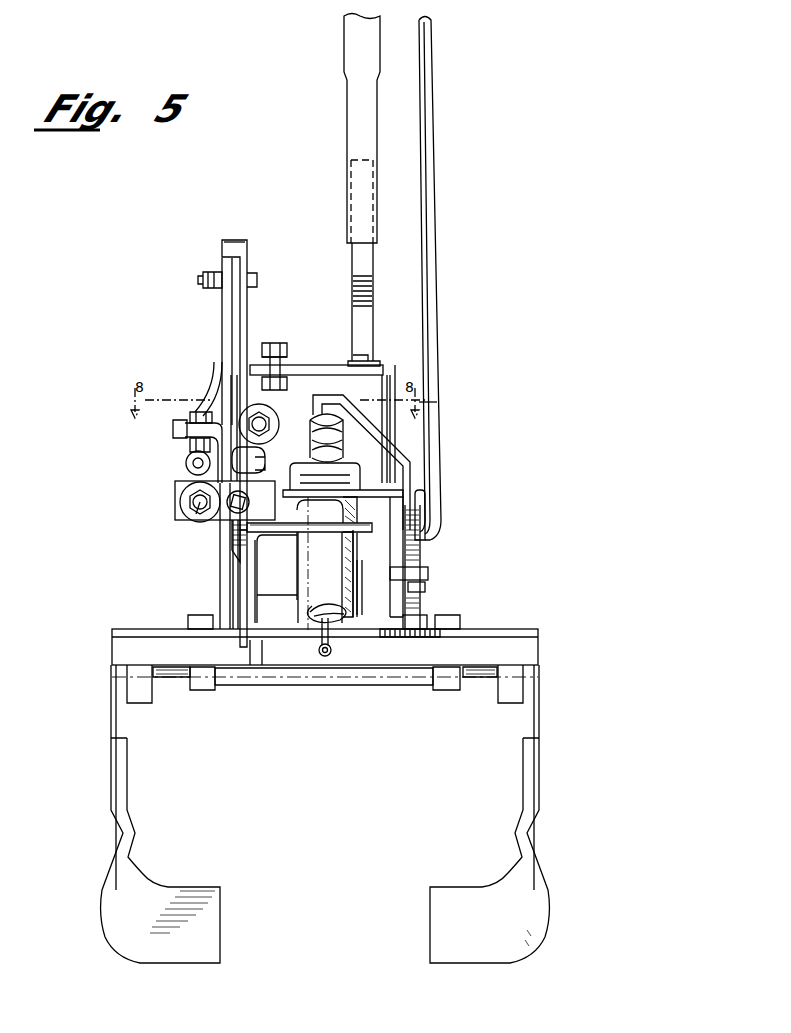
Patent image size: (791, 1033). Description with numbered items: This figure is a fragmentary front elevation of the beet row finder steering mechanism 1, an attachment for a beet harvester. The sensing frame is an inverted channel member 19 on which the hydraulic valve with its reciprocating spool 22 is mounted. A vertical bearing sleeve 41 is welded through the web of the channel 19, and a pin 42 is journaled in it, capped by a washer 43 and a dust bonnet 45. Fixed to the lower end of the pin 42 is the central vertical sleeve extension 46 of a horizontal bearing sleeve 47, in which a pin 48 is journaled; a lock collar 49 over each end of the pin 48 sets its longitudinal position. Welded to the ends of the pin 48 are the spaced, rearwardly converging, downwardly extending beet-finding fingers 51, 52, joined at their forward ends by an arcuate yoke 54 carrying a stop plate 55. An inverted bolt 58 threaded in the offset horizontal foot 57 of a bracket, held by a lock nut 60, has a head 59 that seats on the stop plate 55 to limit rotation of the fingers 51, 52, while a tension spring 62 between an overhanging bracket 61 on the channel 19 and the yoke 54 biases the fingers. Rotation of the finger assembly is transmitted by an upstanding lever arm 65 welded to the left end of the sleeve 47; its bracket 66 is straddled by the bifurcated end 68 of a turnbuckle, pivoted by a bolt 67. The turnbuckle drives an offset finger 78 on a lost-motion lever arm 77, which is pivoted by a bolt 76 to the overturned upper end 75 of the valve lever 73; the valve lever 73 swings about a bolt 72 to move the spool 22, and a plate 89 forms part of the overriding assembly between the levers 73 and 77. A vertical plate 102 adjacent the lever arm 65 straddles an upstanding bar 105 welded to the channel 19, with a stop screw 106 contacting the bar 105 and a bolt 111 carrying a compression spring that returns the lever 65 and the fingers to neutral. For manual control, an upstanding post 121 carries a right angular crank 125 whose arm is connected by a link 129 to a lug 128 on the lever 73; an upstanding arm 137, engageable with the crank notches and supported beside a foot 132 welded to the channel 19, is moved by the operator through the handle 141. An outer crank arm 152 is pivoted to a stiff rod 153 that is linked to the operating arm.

The beet row finder steering mechanism 1 is at (528, 523).
The inverted channel member 19 is at (285, 545).
The reciprocating spool 22 is at (258, 474).
The vertical bearing sleeve 41 is at (352, 568).
The pin 42 is at (306, 566).
The washer 43 is at (370, 492).
The dust bonnet 45 is at (310, 460).
The central vertical sleeve extension 46 is at (351, 599).
The horizontal bearing sleeve 47 is at (345, 682).
The pin 48 is at (490, 633).
The lock collar 49 is at (195, 618).
The beet-finding finger 51 is at (115, 905).
The beet-finding finger 52 is at (437, 912).
The arcuate yoke 54 is at (258, 666).
The stop plate 55 is at (432, 640).
The offset horizontal foot 57 is at (429, 575).
The inverted bolt 58 is at (424, 553).
The head 59 is at (428, 618).
The lock nut 60 is at (426, 587).
The overhanging bracket 61 is at (318, 393).
The tension spring 62 is at (335, 638).
The lever arm 65 is at (221, 571).
The bracket 66 is at (188, 422).
The bolt 67 is at (196, 410).
The bifurcated end 68 is at (186, 448).
The bolt 72 is at (265, 615).
The valve lever 73 is at (248, 323).
The overturned upper end 75 is at (235, 240).
The bolt 76 is at (257, 280).
The lost-motion lever arm 77 is at (227, 322).
The offset finger 78 is at (213, 398).
The plate 89 is at (280, 426).
The vertical plate 102 is at (176, 507).
The upstanding bar 105 is at (233, 542).
The stop screw 106 is at (246, 500).
The bolt 111 is at (195, 512).
The upstanding post 121 is at (386, 384).
The right angular crank 125 is at (313, 367).
The lug 128 is at (258, 355).
The link 129 is at (292, 362).
The foot 132 is at (430, 402).
The upstanding arm 137 is at (352, 290).
The handle 141 is at (346, 120).
The outer crank arm 152 is at (428, 497).
The stiff rod 153 is at (437, 270).